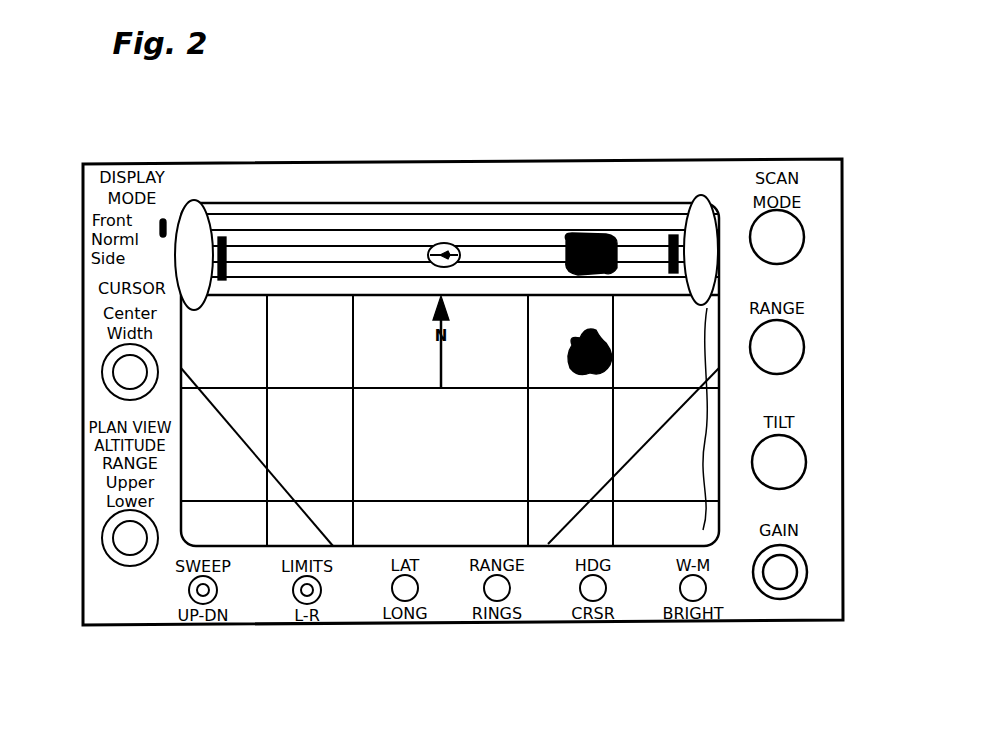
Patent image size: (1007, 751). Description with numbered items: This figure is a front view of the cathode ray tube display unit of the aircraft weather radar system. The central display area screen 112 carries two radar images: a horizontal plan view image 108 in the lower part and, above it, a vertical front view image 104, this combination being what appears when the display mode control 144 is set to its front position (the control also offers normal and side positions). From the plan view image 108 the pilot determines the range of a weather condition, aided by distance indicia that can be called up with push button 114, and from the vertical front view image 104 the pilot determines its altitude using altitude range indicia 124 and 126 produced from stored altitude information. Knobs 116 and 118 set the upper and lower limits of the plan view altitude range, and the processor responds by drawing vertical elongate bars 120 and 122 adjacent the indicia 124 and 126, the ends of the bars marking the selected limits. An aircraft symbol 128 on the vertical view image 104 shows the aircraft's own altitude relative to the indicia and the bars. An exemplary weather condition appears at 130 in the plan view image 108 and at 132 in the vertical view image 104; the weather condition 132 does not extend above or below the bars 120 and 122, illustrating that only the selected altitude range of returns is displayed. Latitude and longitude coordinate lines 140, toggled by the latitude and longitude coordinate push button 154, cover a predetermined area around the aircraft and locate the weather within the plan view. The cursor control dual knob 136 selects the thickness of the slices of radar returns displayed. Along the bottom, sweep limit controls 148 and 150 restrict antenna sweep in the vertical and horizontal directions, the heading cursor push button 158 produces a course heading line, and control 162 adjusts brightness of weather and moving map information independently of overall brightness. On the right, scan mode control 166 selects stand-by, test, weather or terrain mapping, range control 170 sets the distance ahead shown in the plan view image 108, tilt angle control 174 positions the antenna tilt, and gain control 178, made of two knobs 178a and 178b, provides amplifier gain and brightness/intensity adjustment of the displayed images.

The vertical front view image 104 is at (370, 206).
The horizontal plan view image 108 is at (740, 398).
The display area screen 112 is at (674, 472).
The push button 114 is at (509, 588).
The knob 116 is at (113, 558).
The knob 118 is at (142, 556).
The vertical elongate bar 120 is at (228, 243).
The vertical elongate bar 122 is at (668, 238).
The altitude range indicia 124 is at (197, 204).
The altitude range indicia 126 is at (700, 196).
The aircraft symbol 128 is at (446, 244).
The weather condition 130 is at (612, 352).
The weather condition 132 is at (598, 233).
The cursor control dual knob 136 is at (103, 372).
The latitude and longitude coordinate lines 140 is at (382, 503).
The display mode control 144 is at (160, 226).
The sweep limit control 148 is at (218, 590).
The sweep limit control 150 is at (294, 590).
The latitude and longitude coordinate push button 154 is at (418, 588).
The heading cursor push button 158 is at (608, 588).
The brightness control 162 is at (706, 588).
The scan mode control 166 is at (805, 236).
The range control 170 is at (805, 347).
The tilt angle control 174 is at (806, 462).
The gain control 178 is at (835, 599).
The knob 178a is at (797, 556).
The knob 178b is at (778, 580).